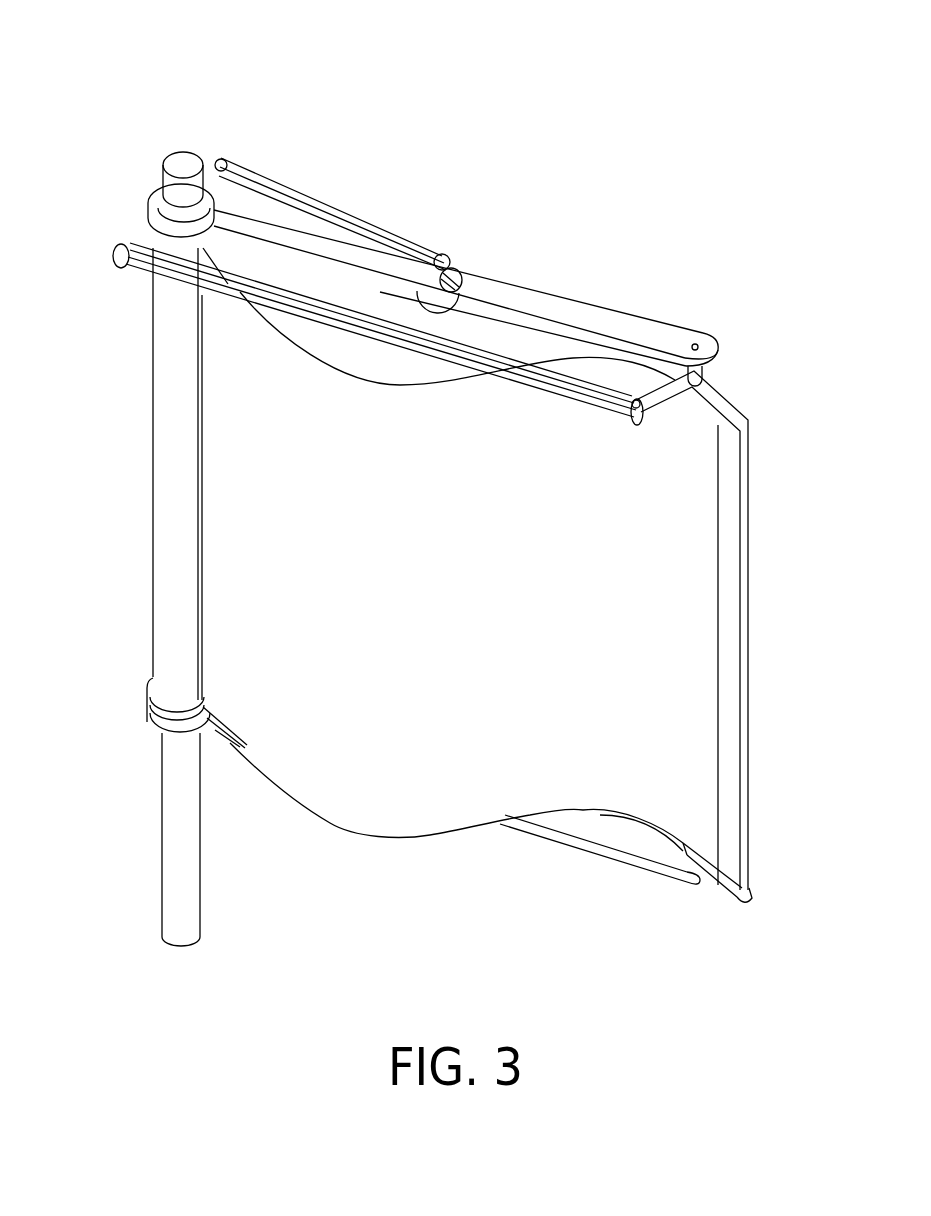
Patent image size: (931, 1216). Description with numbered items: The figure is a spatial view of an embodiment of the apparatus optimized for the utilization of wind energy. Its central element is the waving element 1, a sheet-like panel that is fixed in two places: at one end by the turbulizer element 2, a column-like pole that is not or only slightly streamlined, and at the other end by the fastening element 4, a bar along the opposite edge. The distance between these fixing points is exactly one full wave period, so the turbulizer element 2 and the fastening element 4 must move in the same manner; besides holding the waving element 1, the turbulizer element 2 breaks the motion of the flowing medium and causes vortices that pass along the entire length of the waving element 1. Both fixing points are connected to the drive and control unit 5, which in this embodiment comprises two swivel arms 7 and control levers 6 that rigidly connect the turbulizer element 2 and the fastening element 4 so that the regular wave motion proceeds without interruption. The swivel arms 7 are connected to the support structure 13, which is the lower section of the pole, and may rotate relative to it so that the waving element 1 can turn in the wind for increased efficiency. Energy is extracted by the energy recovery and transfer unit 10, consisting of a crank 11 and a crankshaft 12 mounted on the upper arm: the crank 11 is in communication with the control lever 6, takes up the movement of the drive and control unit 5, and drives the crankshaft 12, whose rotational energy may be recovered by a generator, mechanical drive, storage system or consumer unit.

The waving element 1 is at (640, 600).
The turbulizer element 2 is at (170, 502).
The fastening element 4 is at (728, 678).
The drive and control unit 5 is at (275, 78).
The control lever 6 is at (133, 247).
The swivel arm 7 is at (218, 192).
The energy recovery and transfer unit 10 is at (504, 209).
The crank 11 is at (496, 242).
The crankshaft 12 is at (443, 261).
The support structure 13 is at (187, 858).